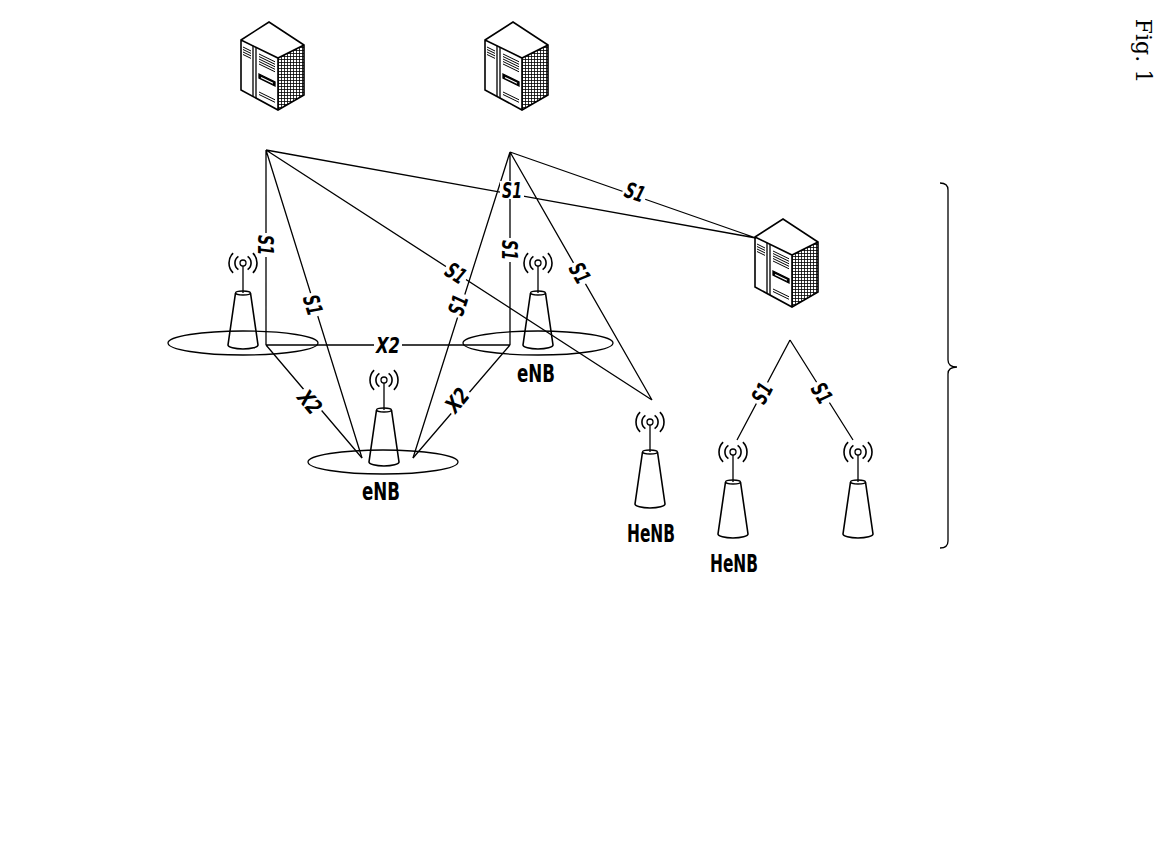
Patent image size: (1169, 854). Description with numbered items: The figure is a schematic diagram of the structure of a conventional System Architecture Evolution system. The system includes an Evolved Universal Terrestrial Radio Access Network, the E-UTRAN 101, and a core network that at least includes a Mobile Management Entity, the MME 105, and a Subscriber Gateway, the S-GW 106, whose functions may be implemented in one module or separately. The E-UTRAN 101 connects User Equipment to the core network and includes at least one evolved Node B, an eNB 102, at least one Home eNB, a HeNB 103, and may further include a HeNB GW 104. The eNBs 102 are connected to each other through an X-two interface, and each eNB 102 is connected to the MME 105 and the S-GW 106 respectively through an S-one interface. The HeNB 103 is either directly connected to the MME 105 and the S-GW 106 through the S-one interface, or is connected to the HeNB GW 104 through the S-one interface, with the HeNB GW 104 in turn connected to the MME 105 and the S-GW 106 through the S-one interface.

The Evolved Universal Terrestrial Radio Access Network (E-UTRAN) 101 is at (1060, 366).
The evolved Node B (eNB) 102 is at (228, 317).
The Home eNB (HeNB) 103 is at (871, 510).
The HeNB GW 104 is at (820, 270).
The Mobile Management Entity (MME) 105 is at (548, 73).
The Subscriber Gateway (S-GW) 106 is at (304, 73).